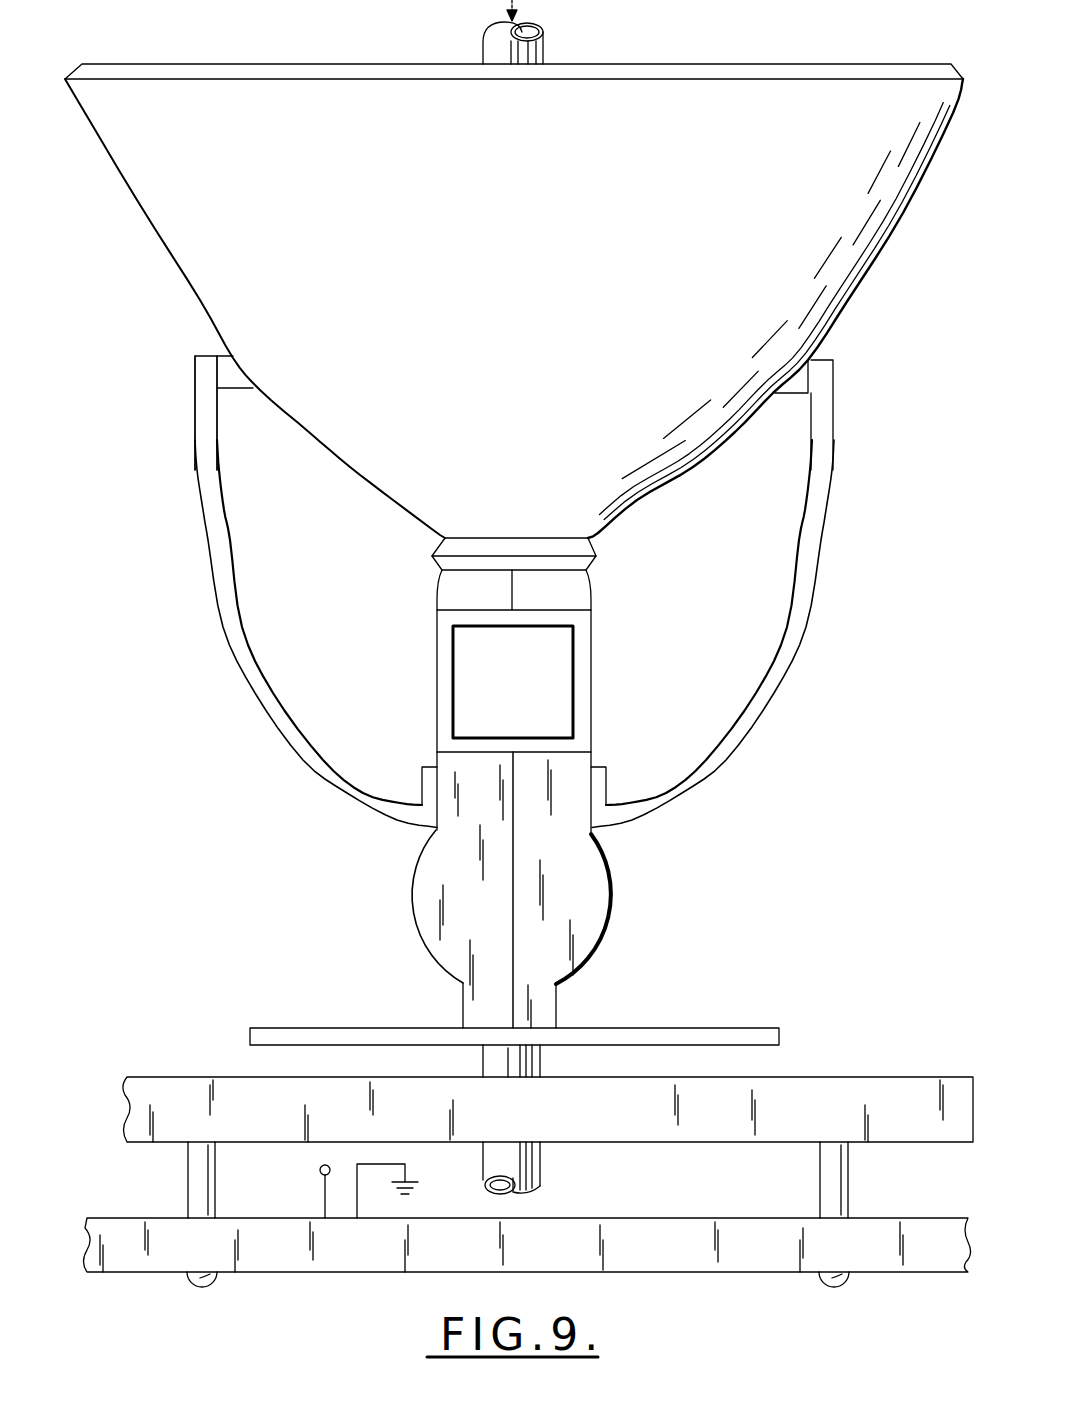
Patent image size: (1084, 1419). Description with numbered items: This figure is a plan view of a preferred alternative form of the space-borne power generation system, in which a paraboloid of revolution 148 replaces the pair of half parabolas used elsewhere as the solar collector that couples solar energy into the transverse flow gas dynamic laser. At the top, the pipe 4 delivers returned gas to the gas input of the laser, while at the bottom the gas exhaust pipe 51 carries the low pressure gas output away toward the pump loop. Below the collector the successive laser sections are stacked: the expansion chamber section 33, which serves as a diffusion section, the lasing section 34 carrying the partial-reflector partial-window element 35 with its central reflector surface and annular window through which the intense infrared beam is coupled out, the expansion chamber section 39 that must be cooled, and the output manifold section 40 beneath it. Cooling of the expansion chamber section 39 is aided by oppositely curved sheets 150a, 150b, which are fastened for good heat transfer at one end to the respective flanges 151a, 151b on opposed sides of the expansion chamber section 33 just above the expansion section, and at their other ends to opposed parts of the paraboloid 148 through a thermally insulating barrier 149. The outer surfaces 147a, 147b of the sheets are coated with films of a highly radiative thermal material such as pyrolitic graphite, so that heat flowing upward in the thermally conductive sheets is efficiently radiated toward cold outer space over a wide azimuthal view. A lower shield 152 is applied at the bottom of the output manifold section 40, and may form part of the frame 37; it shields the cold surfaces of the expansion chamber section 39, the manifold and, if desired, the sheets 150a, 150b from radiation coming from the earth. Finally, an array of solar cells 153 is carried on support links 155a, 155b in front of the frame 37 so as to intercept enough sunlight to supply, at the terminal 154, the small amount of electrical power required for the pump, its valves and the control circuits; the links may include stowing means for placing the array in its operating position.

The pipe 4 is at (483, 48).
The paraboloid of revolution 148 is at (712, 64).
The thermally insulating barrier 149 is at (210, 344).
The curved sheet 150a is at (195, 488).
The curved sheet 150b is at (833, 452).
The outer surface 147a is at (222, 628).
The outer surface 147b is at (802, 668).
The expansion chamber section 33 is at (590, 590).
The lasing section 34 is at (585, 636).
The partial-reflector partial-window element 35 is at (563, 670).
The flange 151a is at (422, 767).
The flange 151b is at (606, 788).
The expansion chamber section 39 is at (612, 914).
The output manifold section 40 is at (557, 1010).
The lower shield 152 is at (700, 1028).
The frame 37 is at (852, 1078).
The gas exhaust pipe 51 is at (540, 1170).
The support link 155a is at (188, 1190).
The support link 155b is at (848, 1200).
The terminal 154 is at (320, 1172).
The array of solar cells 153 is at (692, 1224).